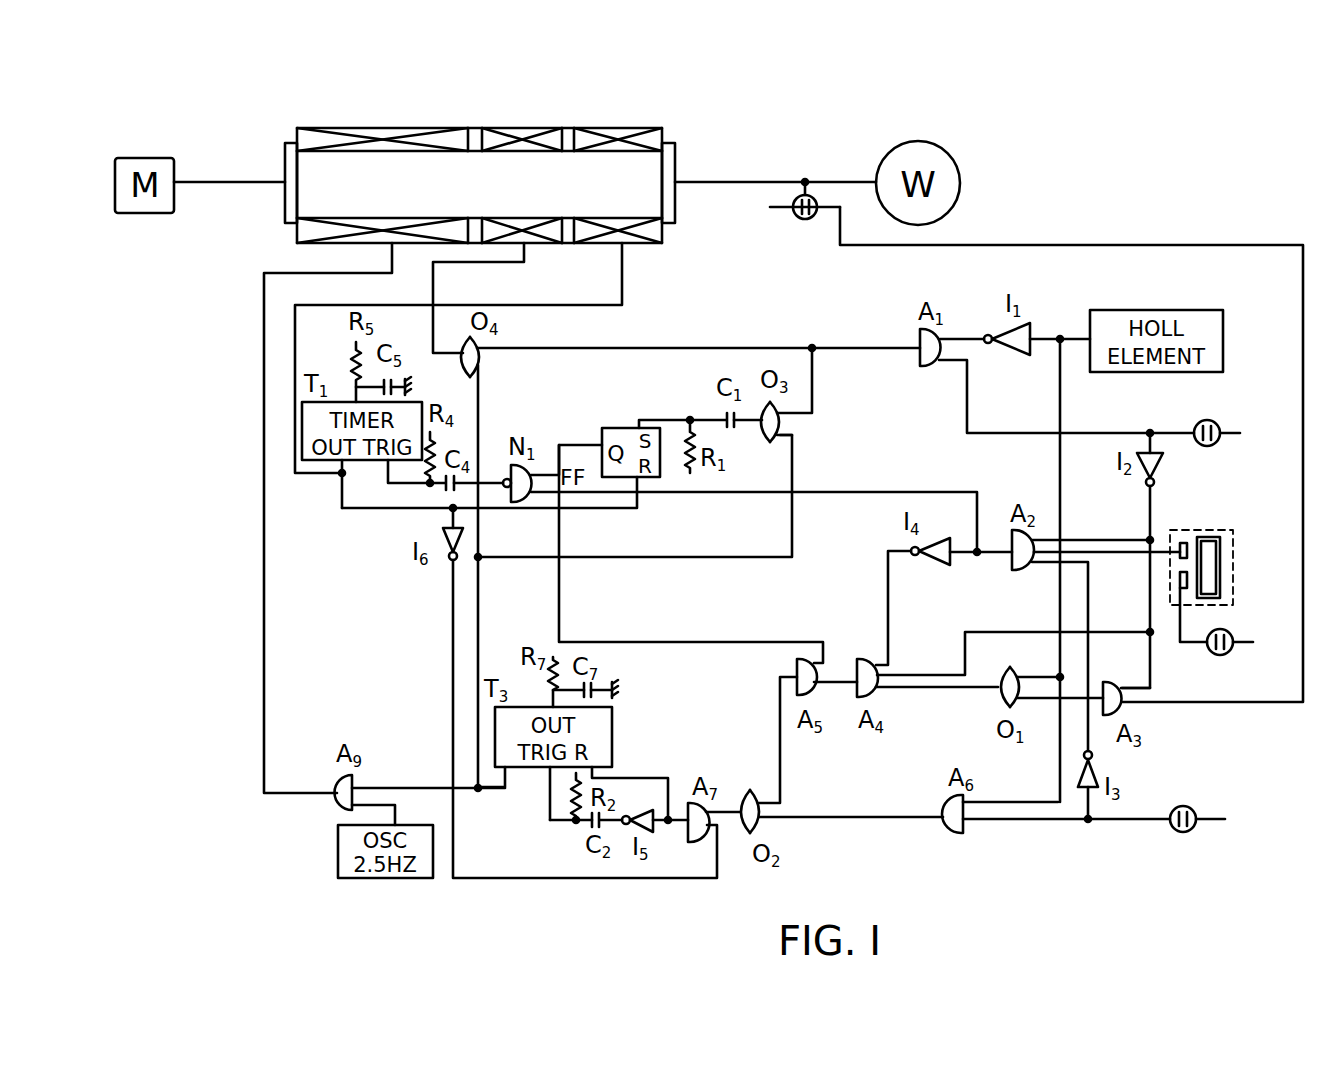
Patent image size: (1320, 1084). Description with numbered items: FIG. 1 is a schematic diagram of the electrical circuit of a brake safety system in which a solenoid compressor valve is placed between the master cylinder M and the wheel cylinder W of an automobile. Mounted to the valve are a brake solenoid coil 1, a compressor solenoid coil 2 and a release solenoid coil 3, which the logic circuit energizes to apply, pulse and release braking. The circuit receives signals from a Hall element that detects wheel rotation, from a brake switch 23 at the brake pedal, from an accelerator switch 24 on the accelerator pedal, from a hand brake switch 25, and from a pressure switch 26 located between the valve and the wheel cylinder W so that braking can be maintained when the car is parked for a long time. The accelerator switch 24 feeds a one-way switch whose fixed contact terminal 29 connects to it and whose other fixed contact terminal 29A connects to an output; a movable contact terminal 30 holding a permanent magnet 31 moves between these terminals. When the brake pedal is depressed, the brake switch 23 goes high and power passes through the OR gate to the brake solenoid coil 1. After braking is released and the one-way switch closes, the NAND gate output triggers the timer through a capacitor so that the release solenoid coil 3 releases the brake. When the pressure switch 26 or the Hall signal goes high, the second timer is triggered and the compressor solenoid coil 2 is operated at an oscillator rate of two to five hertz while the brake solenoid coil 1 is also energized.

The brake solenoid coil 1 is at (522, 134).
The compressor solenoid coil 2 is at (298, 140).
The release solenoid coil 3 is at (618, 132).
The brake switch 23 is at (1218, 421).
The accelerator switch 24 is at (1224, 630).
The hand brake switch 25 is at (1190, 806).
The pressure switch 26 is at (805, 219).
The fixed contact terminal of one-way switch 29 is at (1178, 580).
The fixed contact terminal of one-way switch 29A is at (1182, 541).
The movable contact terminal 30 is at (1213, 536).
The permanent magnet 31 is at (1208, 572).